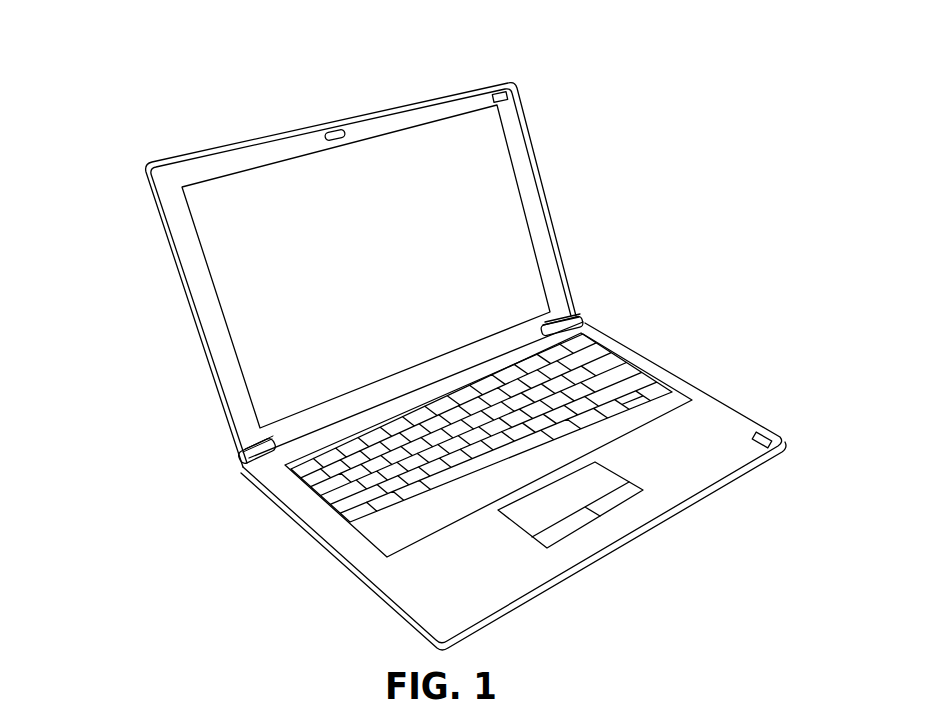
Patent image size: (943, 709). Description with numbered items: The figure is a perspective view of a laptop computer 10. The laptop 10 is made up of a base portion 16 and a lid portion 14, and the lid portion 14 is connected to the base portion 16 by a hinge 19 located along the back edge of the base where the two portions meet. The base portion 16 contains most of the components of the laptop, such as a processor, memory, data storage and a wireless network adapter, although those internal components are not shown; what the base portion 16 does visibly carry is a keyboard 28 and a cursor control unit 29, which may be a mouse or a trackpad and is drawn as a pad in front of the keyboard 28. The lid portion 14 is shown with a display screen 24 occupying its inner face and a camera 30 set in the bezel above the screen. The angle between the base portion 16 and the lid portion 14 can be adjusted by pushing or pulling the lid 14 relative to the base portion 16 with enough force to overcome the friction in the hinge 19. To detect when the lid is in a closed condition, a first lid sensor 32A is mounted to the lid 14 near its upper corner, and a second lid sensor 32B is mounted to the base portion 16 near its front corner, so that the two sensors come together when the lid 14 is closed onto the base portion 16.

The laptop computer 10 is at (115, 139).
The lid portion 14 is at (237, 142).
The base portion 16 is at (420, 573).
The hinge 19 is at (583, 322).
The display screen 24 is at (235, 268).
The keyboard 28 is at (330, 493).
The cursor control unit 29 is at (598, 495).
The camera 30 is at (342, 127).
The first lid sensor 32A is at (497, 88).
The second lid sensor 32B is at (778, 434).